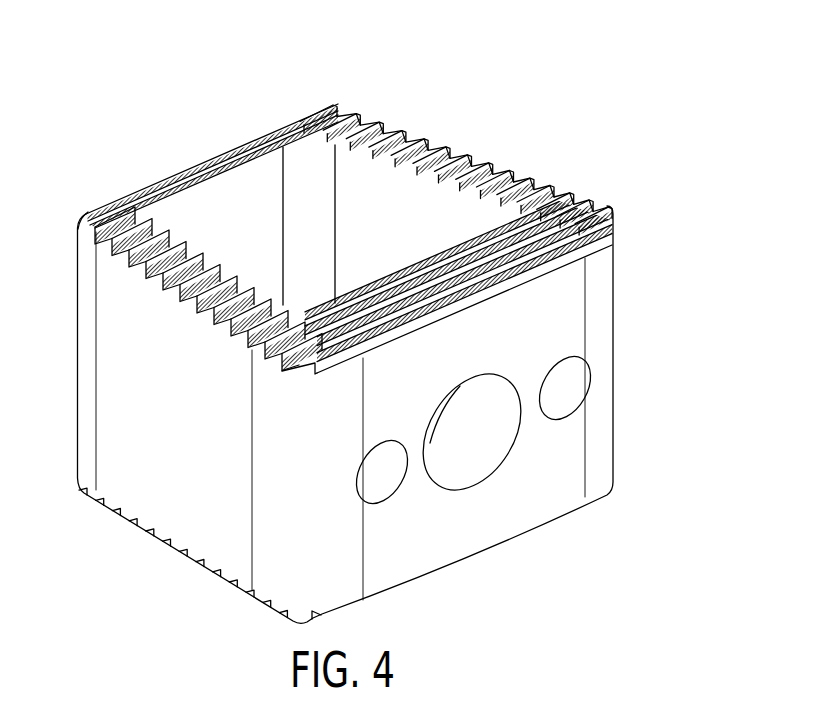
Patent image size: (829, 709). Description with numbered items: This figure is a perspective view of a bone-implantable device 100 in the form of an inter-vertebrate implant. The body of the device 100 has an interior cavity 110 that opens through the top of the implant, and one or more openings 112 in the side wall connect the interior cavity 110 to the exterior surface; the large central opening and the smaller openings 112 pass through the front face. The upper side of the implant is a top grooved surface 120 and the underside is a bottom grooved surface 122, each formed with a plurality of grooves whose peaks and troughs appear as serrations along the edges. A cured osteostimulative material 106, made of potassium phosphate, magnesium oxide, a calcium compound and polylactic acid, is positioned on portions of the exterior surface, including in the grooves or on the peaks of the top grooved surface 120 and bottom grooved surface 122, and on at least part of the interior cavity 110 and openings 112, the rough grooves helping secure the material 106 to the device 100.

The bone-implantable device 100 is at (704, 98).
The cured osteostimulative material 106 is at (92, 209).
The interior cavity 110 is at (224, 205).
The openings 112 is at (482, 460).
The top grooved surface 120 is at (448, 139).
The bottom grooved surface 122 is at (95, 575).